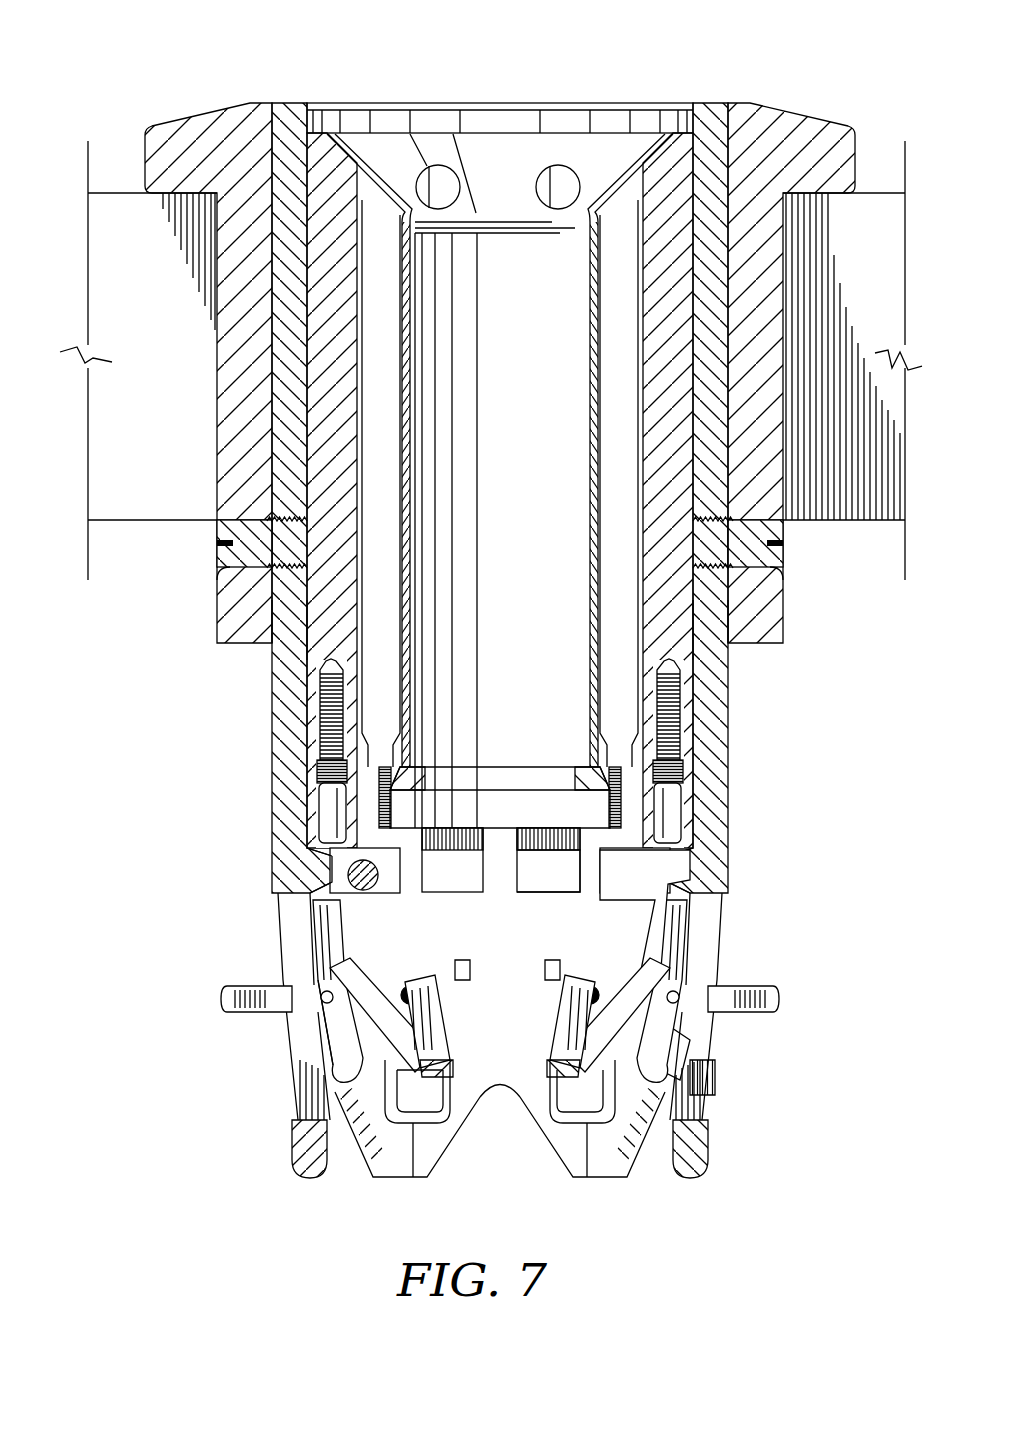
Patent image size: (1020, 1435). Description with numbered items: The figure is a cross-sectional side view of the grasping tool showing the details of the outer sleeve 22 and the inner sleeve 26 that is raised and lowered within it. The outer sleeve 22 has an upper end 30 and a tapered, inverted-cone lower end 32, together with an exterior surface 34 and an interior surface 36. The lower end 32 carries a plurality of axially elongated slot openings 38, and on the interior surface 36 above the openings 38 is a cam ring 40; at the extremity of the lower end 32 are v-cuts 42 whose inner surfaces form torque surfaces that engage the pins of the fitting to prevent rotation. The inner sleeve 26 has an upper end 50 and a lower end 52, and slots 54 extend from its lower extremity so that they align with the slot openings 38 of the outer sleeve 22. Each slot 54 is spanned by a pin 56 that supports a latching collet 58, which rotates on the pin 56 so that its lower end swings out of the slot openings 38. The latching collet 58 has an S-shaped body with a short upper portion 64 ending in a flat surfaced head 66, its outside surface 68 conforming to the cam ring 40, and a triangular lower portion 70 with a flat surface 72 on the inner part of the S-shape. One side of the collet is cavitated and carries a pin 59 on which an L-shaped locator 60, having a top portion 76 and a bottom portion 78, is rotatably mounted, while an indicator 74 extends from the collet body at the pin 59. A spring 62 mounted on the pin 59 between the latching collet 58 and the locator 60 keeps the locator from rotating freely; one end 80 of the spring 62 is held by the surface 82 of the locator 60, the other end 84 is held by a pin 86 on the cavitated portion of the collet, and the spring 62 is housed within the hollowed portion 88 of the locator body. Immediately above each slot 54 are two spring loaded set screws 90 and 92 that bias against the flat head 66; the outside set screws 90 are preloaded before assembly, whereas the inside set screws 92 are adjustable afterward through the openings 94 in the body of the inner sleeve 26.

The outer sleeve 22 is at (282, 735).
The inner sleeve 26 is at (670, 643).
The upper end 30 is at (288, 103).
The lower end 32 is at (310, 1148).
The exterior surface 34 is at (270, 687).
The interior surface 36 is at (310, 627).
The slot openings 38 is at (285, 913).
The cam ring 40 is at (325, 880).
The v-cuts 42 is at (470, 1105).
The upper end 50 is at (512, 147).
The lower end 52 is at (503, 877).
The slots 54 is at (517, 833).
The pin 56 is at (317, 863).
The latching collet 58 is at (537, 857).
The pin 59 is at (325, 1003).
The locator 60 is at (313, 953).
The spring 62 is at (420, 993).
The upper portion 64 is at (647, 910).
The flat surfaced head 66 is at (668, 840).
The outside surface 68 is at (673, 867).
The lower portion 70 is at (687, 1090).
The flat surface 72 is at (440, 1040).
The indicator 74 is at (222, 1000).
The top portion 76 is at (322, 930).
The bottom portion 78 is at (360, 1043).
The end 80 is at (460, 1050).
The surface 82 is at (470, 1062).
The end 84 is at (460, 960).
The pin 86 is at (430, 893).
The hollowed portion 88 is at (563, 973).
The set screw 90 is at (328, 813).
The set screw 92 is at (393, 800).
The openings 94 is at (401, 692).